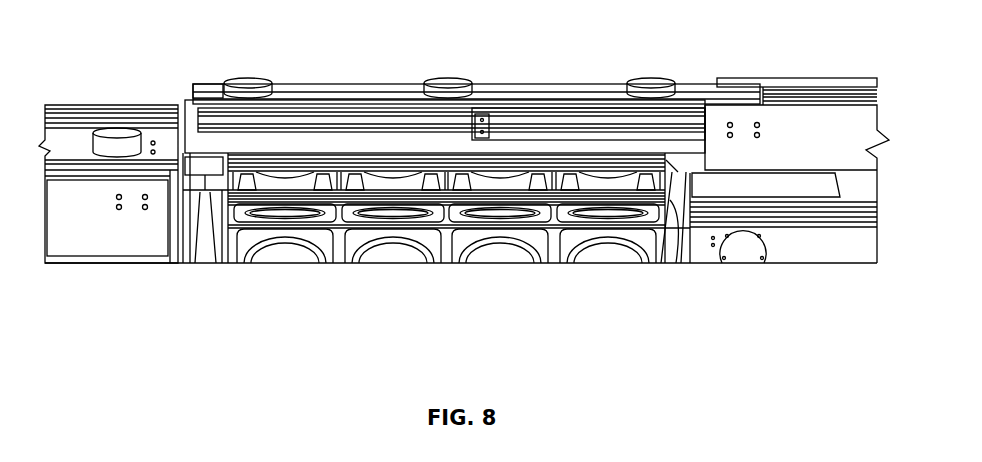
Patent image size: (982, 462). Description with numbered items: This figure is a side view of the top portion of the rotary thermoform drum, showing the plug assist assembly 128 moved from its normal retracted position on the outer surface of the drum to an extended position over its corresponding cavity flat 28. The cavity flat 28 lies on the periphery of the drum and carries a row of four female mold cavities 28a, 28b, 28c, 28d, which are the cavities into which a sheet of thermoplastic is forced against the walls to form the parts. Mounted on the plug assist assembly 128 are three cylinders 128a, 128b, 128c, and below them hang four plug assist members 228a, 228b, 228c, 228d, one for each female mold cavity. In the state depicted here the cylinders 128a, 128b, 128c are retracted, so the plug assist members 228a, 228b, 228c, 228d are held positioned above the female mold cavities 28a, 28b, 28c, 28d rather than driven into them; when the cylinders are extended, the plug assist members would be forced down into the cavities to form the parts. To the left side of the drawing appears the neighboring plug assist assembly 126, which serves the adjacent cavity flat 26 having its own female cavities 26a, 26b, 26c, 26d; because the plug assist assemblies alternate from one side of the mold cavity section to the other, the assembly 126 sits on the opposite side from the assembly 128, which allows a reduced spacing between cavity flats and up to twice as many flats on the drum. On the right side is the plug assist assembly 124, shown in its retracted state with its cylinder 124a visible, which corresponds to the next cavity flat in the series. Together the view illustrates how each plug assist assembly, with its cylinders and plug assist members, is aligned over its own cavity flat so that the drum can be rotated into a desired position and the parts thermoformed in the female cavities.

The cavity flat 26 is at (657, 250).
The female cavity 26a is at (279, 248).
The female cavity 26b is at (393, 248).
The female cavity 26c is at (498, 248).
The female cavity 26d is at (603, 248).
The cavity flat 28 is at (680, 210).
The female mold cavity 28a is at (284, 214).
The female mold cavity 28b is at (398, 214).
The female mold cavity 28c is at (507, 214).
The female mold cavity 28d is at (610, 214).
The plug assist member 228a is at (270, 180).
The plug assist member 228b is at (387, 180).
The plug assist member 228c is at (492, 180).
The plug assist member 228d is at (597, 180).
The plug assist assembly 124 is at (807, 248).
The cylinder 124a is at (743, 254).
The plug assist assembly 126 is at (63, 152).
The plug assist assembly 128 is at (372, 92).
The cylinder 128a is at (247, 78).
The cylinder 128b is at (453, 78).
The cylinder 128c is at (650, 78).